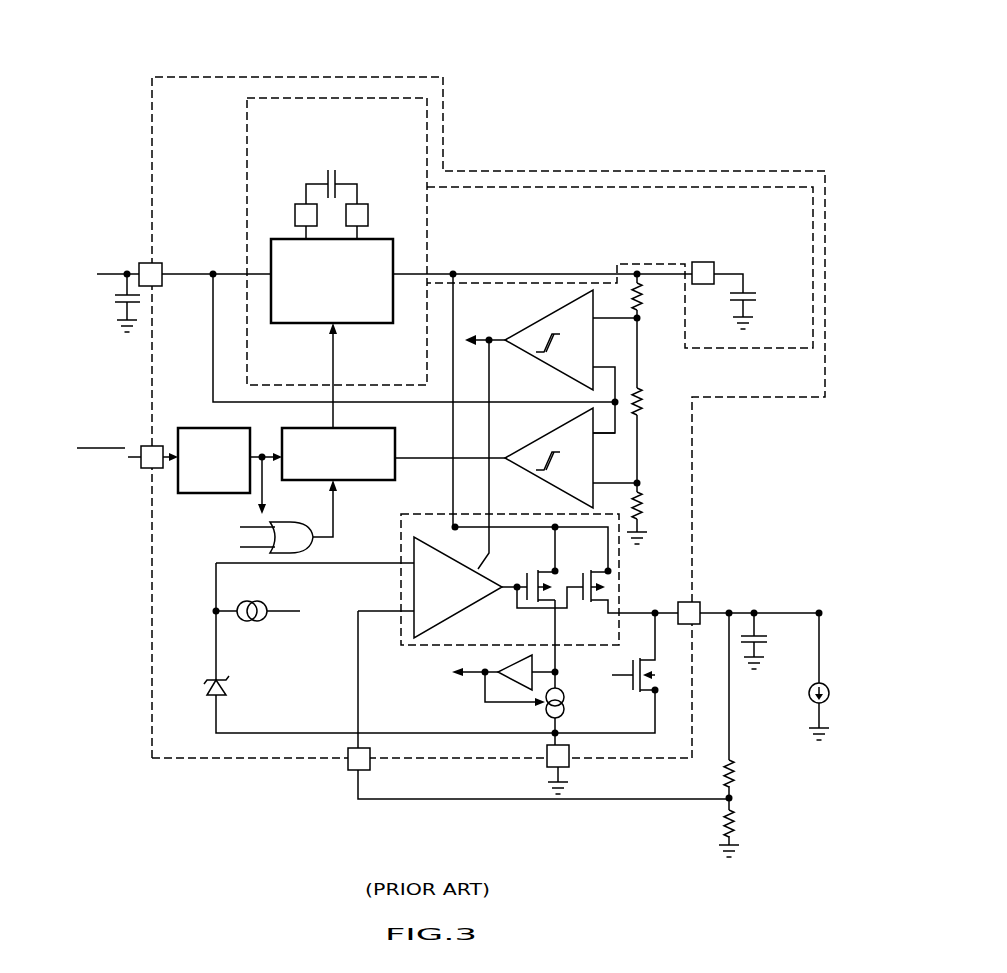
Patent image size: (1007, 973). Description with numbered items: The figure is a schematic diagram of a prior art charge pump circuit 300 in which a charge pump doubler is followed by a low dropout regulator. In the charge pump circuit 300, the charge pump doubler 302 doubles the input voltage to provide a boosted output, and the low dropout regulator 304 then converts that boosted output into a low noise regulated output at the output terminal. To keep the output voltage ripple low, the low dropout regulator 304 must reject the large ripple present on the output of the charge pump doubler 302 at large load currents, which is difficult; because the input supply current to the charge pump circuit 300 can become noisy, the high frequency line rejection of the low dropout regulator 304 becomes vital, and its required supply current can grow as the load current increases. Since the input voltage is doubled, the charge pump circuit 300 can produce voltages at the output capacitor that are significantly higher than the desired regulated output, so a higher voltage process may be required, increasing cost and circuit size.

The charge pump circuit 300 is at (671, 52).
The charge pump doubler 302 is at (562, 188).
The low dropout regulator 304 is at (620, 571).